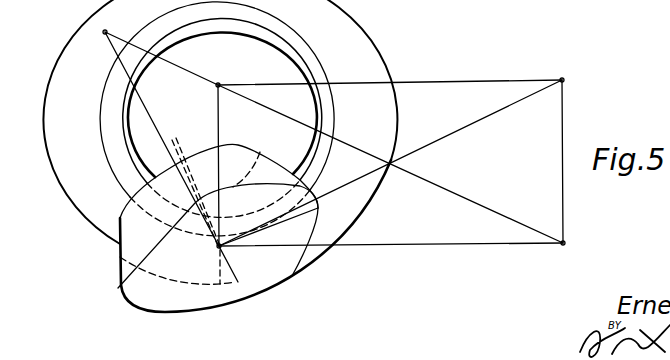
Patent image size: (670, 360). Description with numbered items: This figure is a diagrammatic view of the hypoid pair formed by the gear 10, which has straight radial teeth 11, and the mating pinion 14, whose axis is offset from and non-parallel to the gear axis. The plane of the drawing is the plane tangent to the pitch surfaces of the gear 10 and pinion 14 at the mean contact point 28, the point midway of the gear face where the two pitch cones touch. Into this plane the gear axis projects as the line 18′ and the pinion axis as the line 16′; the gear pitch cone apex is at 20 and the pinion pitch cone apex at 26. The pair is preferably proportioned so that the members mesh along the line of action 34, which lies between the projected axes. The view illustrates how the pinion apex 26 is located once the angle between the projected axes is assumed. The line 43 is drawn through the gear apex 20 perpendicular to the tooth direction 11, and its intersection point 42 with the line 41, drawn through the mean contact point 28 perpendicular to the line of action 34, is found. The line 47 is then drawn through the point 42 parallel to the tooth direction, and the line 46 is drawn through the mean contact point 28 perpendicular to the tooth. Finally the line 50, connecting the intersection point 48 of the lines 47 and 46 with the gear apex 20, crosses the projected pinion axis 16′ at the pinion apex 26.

The gear 10 is at (363, 45).
The straight radial teeth 11 is at (219, 265).
The pinion 14 is at (169, 302).
The projected pinion axis 16′ is at (157, 127).
The projected gear axis 18′ is at (220, 132).
The gear pitch cone apex 20 is at (219, 82).
The pinion pitch cone apex 26 is at (103, 31).
The mean contact point 28 is at (221, 249).
The line of action 34 is at (178, 152).
The line perpendicular to line of action 41 is at (468, 125).
The intersection point 42 is at (566, 80).
The line through gear apex 43 is at (432, 83).
The line through mean contact point 46 is at (403, 245).
The line parallel to tooth direction 47 is at (565, 198).
The intersection point 48 is at (567, 244).
The apex-locating line 50 is at (452, 192).